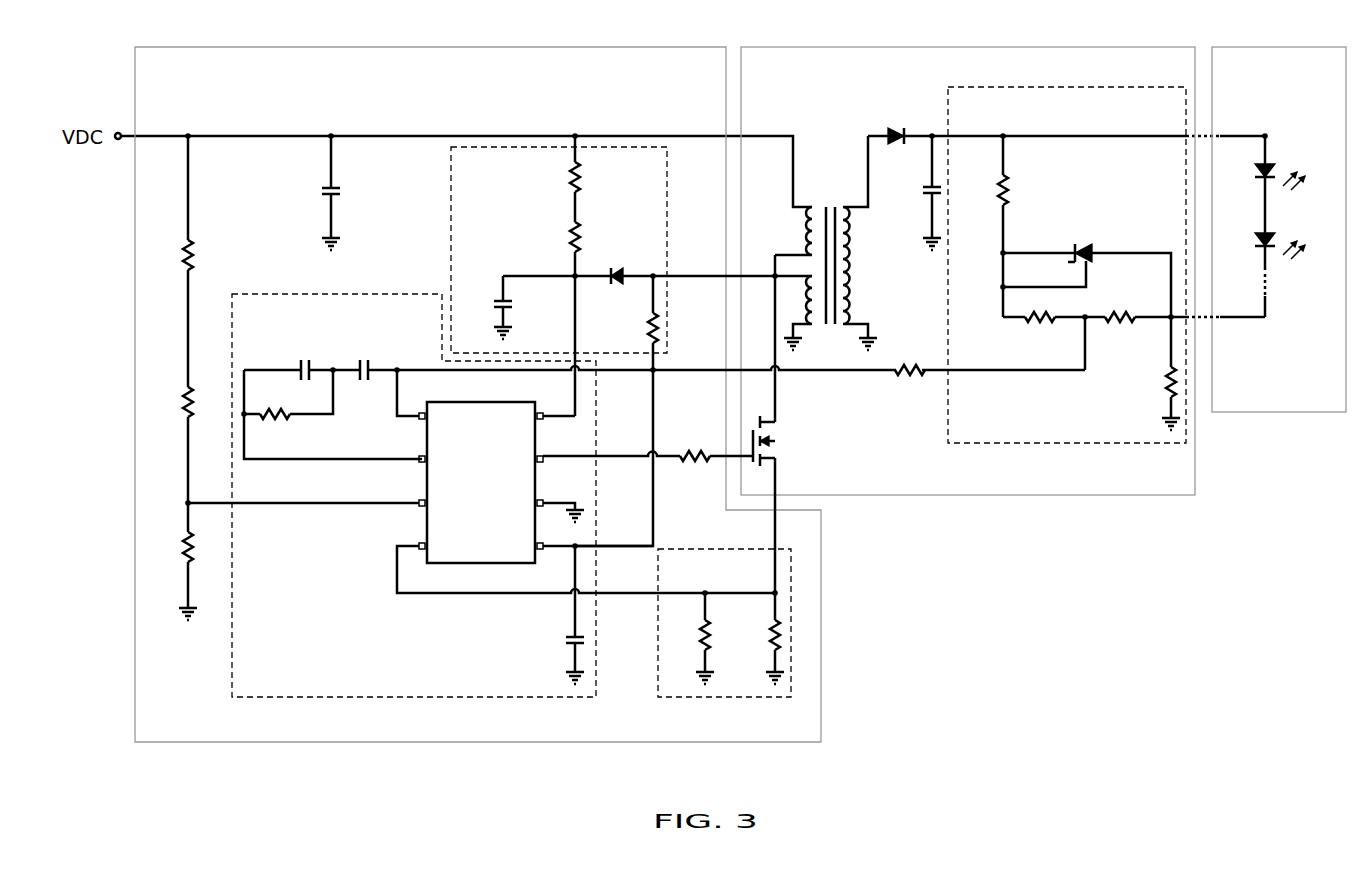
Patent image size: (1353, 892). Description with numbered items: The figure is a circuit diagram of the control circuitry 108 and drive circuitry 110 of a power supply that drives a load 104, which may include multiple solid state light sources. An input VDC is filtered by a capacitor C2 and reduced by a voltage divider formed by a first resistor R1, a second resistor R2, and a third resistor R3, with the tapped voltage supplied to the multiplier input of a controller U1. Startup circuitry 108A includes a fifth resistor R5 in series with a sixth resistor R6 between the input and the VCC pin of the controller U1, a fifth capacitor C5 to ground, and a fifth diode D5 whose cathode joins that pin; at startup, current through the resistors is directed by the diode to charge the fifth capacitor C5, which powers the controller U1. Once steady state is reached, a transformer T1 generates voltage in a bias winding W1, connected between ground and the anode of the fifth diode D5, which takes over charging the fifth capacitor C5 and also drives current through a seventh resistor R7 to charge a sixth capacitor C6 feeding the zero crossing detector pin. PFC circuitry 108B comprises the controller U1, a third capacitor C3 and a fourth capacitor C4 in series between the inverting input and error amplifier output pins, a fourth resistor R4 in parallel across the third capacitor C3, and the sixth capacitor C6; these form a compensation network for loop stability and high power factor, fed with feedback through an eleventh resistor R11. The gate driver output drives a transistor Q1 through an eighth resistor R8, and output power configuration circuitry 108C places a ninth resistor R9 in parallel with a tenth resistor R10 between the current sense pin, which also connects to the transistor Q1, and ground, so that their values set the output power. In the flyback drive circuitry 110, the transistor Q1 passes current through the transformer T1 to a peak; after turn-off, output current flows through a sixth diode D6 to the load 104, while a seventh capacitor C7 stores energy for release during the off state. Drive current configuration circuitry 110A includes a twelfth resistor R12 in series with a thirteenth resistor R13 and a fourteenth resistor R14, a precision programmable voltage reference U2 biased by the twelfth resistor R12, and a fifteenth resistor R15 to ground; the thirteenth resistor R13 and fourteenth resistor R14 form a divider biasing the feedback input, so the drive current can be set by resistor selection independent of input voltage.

The control circuitry 108 is at (478, 394).
The drive circuitry 110 is at (968, 271).
The load 104 is at (1279, 229).
The startup circuitry 108A is at (631, 341).
The PFC circuitry 108B is at (636, 495).
The output power configuration circuitry 108C is at (724, 623).
The drive current configuration circuitry 110A is at (1106, 265).
The first resistor R1 is at (171, 261).
The second resistor R2 is at (171, 445).
The third resistor R3 is at (173, 561).
The fourth resistor R4 is at (331, 414).
The fifth resistor R5 is at (559, 179).
The sixth resistor R6 is at (559, 319).
The seventh resistor R7 is at (616, 411).
The eighth resistor R8 is at (648, 445).
The ninth resistor R9 is at (690, 637).
The tenth resistor R10 is at (758, 652).
The eleventh resistor R11 is at (906, 358).
The twelfth resistor R12 is at (982, 226).
The thirteenth resistor R13 is at (1038, 332).
The fourteenth resistor R14 is at (1116, 332).
The fifteenth resistor R15 is at (1149, 398).
The capacitor C2 is at (313, 193).
The third capacitor C3 is at (300, 359).
The fourth capacitor C4 is at (361, 359).
The fifth capacitor C5 is at (487, 307).
The sixth capacitor C6 is at (558, 615).
The seventh capacitor C7 is at (917, 193).
The fifth diode D5 is at (657, 265).
The sixth diode D6 is at (896, 125).
The controller U1 is at (481, 470).
The precision programmable voltage reference U2 is at (1087, 293).
The transistor Q1 is at (781, 441).
The transformer T1 is at (826, 243).
The bias winding W1 is at (794, 313).